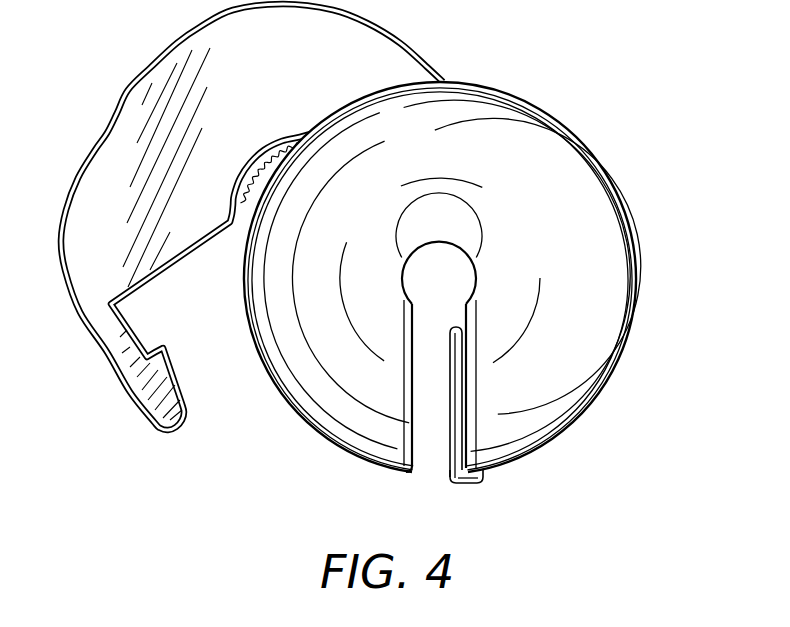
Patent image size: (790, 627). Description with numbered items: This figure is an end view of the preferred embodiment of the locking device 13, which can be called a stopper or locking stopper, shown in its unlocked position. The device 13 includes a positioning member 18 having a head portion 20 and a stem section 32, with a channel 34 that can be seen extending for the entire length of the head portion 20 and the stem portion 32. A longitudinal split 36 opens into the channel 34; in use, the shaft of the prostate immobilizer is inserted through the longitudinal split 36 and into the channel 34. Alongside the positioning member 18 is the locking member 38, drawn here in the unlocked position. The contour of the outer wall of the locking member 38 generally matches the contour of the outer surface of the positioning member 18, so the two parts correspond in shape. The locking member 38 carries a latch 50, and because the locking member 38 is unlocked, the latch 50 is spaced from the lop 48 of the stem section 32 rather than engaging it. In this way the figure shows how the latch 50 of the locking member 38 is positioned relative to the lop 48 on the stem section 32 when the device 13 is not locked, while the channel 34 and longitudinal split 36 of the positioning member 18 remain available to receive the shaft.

The device 13 is at (603, 142).
The positioning member 18 is at (593, 380).
The head portion 20 is at (620, 243).
The stem section 32 is at (447, 478).
The channel 34 is at (430, 256).
The longitudinal split 36 is at (432, 348).
The locking member 38 is at (133, 136).
The lop 48 is at (468, 488).
The latch 50 is at (160, 422).